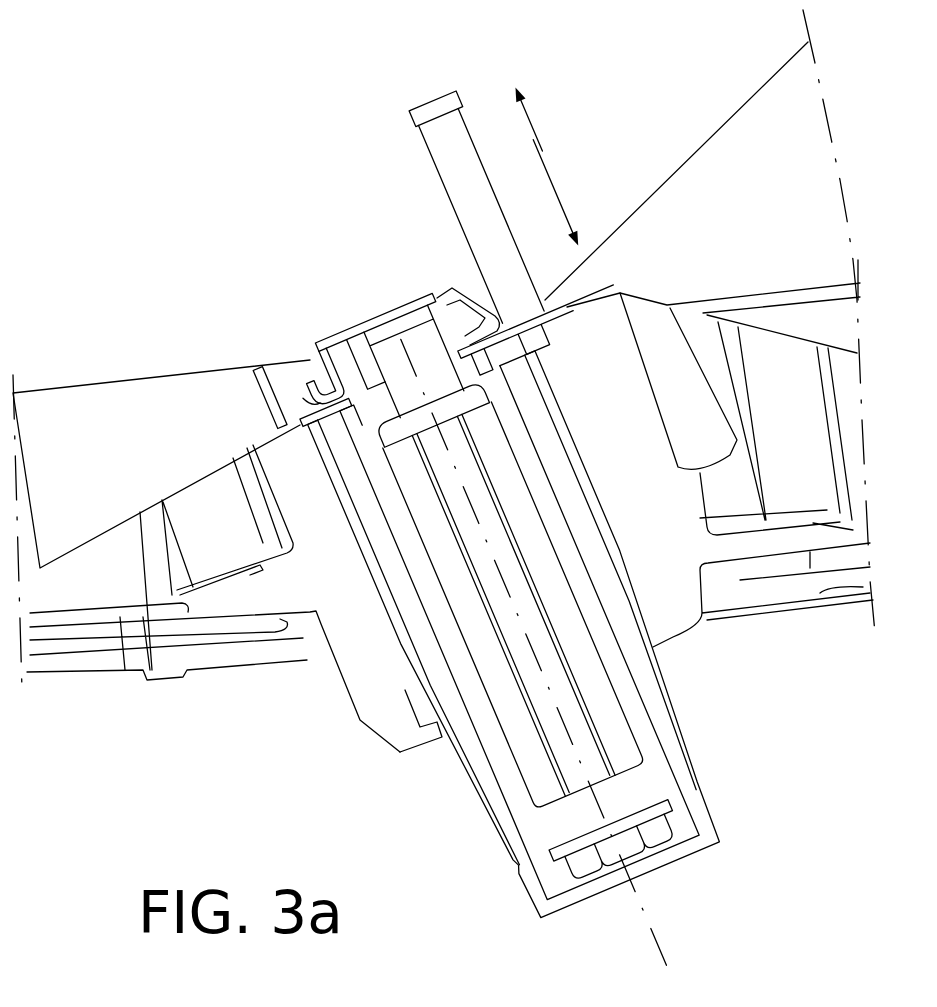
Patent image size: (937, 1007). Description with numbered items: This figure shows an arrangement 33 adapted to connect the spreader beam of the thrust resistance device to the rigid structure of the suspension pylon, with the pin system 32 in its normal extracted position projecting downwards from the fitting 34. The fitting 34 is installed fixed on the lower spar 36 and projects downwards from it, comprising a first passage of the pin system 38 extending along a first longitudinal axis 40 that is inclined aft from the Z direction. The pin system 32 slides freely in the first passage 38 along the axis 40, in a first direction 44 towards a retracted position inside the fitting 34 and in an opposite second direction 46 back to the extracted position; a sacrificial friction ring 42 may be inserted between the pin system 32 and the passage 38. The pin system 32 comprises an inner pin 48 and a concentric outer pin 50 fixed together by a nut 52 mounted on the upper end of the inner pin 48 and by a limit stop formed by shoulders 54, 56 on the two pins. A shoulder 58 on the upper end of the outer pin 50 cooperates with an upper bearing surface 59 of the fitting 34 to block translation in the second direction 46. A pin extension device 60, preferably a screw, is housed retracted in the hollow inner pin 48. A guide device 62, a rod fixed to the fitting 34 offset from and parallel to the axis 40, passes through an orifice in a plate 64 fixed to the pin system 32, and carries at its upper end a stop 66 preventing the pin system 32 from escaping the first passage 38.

The pin system 32 is at (616, 595).
The arrangement 33 is at (330, 258).
The fitting 34 is at (330, 686).
The lower spar 36 is at (53, 653).
The first passage of the pin system 38 is at (392, 567).
The first longitudinal axis 40 is at (387, 307).
The sacrificial friction ring 42 is at (413, 672).
The first direction 44 is at (545, 130).
The second direction 46 is at (567, 207).
The inner pin 48 is at (650, 797).
The outer pin 50 is at (722, 765).
The nut 52 is at (340, 338).
The shoulder 54 is at (330, 385).
The shoulder 56 is at (365, 425).
The shoulder 58 is at (300, 443).
The upper bearing surface 59 is at (305, 435).
The pin extension device 60 is at (590, 873).
The guide device 62 is at (470, 112).
The plate 64 is at (525, 318).
The stop 66 is at (437, 104).